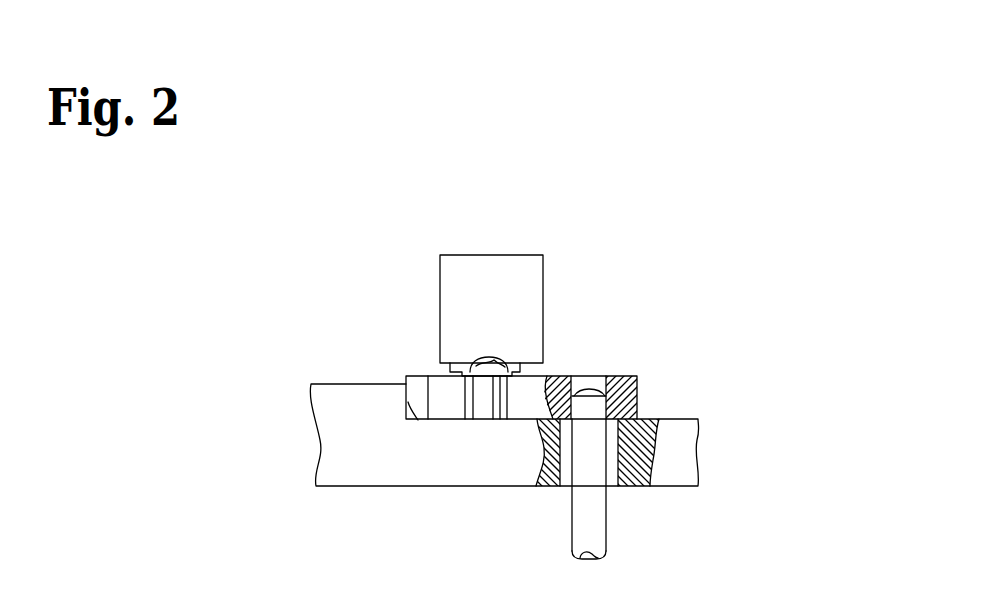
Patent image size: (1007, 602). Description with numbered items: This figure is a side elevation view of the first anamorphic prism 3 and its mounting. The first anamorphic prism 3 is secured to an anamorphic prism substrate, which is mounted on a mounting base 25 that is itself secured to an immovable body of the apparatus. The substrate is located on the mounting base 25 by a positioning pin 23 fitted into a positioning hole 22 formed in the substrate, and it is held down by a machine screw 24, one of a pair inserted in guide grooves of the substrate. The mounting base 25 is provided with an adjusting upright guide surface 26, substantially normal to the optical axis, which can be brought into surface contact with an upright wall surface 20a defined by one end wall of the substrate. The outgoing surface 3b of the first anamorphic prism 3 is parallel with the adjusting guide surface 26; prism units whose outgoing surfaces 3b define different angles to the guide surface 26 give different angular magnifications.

The first anamorphic prism 3 is at (567, 262).
The outgoing surface 3b is at (440, 303).
The upright wall surface 20a is at (405, 377).
The positioning hole 22 is at (600, 378).
The positioning pin 23 is at (570, 516).
The machine screw 24 is at (473, 357).
The mounting base 25 is at (350, 470).
The adjusting upright guide surface 26 is at (418, 420).